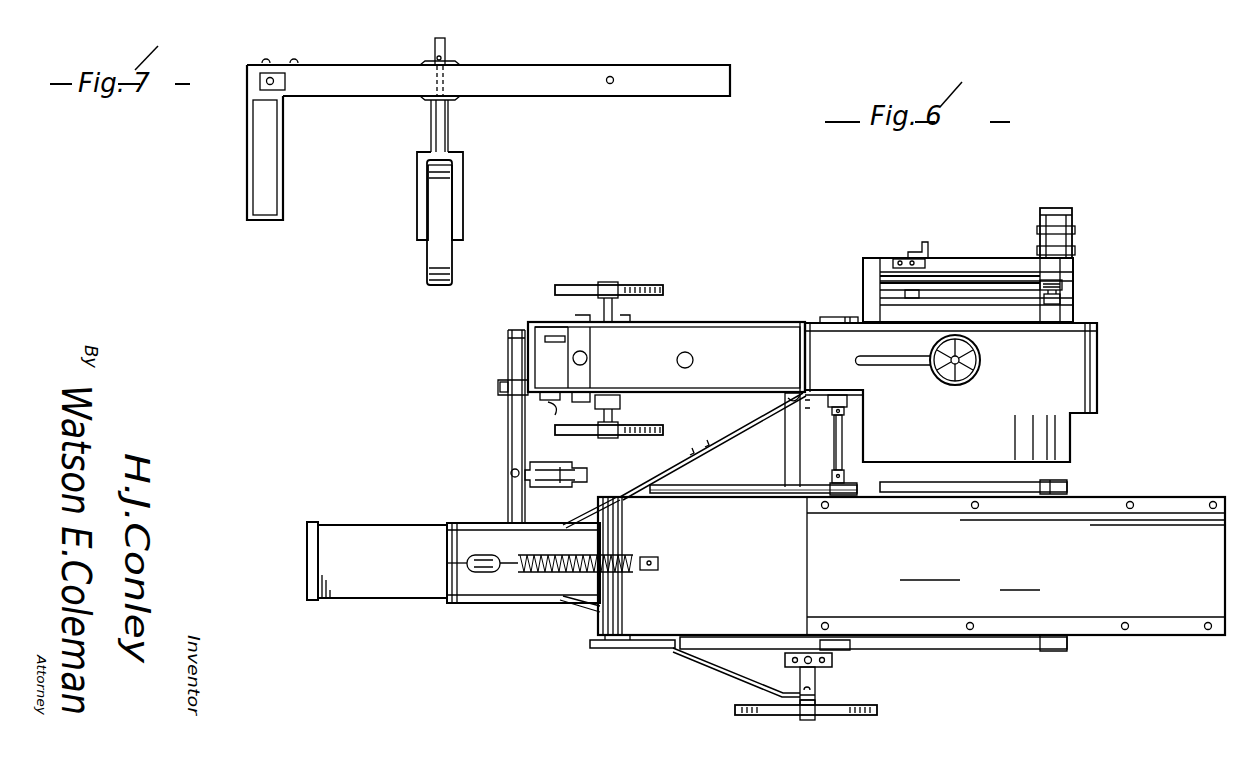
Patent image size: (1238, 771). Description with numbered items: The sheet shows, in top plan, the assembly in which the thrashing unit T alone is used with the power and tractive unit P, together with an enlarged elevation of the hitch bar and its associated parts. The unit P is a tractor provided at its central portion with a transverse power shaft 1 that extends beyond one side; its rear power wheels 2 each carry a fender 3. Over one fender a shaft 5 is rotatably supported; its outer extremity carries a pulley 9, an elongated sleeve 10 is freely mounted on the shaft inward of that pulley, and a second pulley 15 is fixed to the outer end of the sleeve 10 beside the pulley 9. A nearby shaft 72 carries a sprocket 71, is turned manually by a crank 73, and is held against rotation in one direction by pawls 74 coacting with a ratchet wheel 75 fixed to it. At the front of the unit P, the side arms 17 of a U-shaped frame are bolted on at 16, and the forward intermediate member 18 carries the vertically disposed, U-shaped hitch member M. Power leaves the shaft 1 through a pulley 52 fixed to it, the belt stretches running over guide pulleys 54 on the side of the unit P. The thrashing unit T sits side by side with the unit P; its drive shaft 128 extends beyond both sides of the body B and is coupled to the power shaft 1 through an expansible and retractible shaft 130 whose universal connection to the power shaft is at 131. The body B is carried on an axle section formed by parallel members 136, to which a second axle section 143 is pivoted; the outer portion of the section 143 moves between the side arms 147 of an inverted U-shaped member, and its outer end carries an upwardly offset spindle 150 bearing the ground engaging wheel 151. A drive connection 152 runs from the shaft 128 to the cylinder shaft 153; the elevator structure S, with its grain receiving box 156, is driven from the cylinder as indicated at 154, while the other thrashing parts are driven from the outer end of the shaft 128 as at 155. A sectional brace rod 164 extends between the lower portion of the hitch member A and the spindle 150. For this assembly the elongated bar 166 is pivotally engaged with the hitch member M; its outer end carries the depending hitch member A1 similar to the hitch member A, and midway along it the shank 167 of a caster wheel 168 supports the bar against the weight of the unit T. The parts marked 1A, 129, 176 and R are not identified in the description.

In FIG. 6, the power shaft 1 is at (835, 395).
In FIG. 6, the bolt 1A is at (1064, 285).
In FIG. 6, the rear power wheels 2 is at (472, 403).
In FIG. 6, the fender 3 is at (993, 262).
In FIG. 6, the shaft 5 is at (1062, 298).
In FIG. 6, the pulley 9 is at (1055, 212).
In FIG. 6, the elongated sleeve 10 is at (1075, 260).
In FIG. 6, the second pulley 15 is at (1075, 246).
In FIG. 6, the bolts 16 is at (630, 322).
In FIG. 6, the side arms 17 is at (552, 327).
In FIG. 6, the intermediate member 18 is at (545, 340).
In FIG. 6, the pulley 52 is at (848, 400).
In FIG. 6, the guide pulley 54 is at (598, 400).
In FIG. 6, the sprocket 71 is at (898, 261).
In FIG. 6, the shaft 72 is at (880, 283).
In FIG. 6, the crank 73 is at (925, 242).
In FIG. 6, the pawls 74 is at (918, 298).
In FIG. 6, the ratchet wheel 75 is at (885, 312).
In FIG. 6, the drive shaft 128 is at (845, 478).
In FIG. 6, the link rod 129 is at (843, 460).
In FIG. 6, the shaft 130 is at (832, 445).
In FIG. 6, the universal connection 131 is at (845, 411).
In FIG. 6, the parallel members 136 is at (790, 410).
In FIG. 6, the second axle section 143 is at (816, 682).
In FIG. 6, the side arms 147 is at (790, 667).
In FIG. 6, the spindle 150 is at (816, 698).
In FIG. 6, the ground engaging and supporting wheel 151 is at (878, 710).
In FIG. 6, the drive connection 152 is at (755, 495).
In FIG. 6, the cylinder shaft 153 is at (665, 493).
In FIG. 6, the elevator drive 154 is at (632, 650).
In FIG. 6, the drive 155 is at (848, 648).
In FIG. 6, the box 156 is at (375, 598).
In FIG. 6, the brace rod 164 is at (730, 672).
In FIG. 7, the elongated bar 166 is at (578, 77).
In FIG. 6, the elongated bar 166 is at (508, 452).
In FIG. 7, the shank 167 is at (446, 50).
In FIG. 7, the caster wheel 168 is at (445, 203).
In FIG. 6, the caster wheel 168 is at (588, 478).
In FIG. 6, the diagonal brace 176 is at (708, 450).
In FIG. 6, the hitch member A is at (955, 275).
In FIG. 7, the hitch member A1 is at (240, 195).
In FIG. 6, the body B is at (1109, 606).
In FIG. 6, the hitch member M is at (498, 385).
In FIG. 6, the power and tractive unit P is at (731, 341).
In FIG. 6, the rack R is at (545, 416).
In FIG. 6, the elevating structure S is at (520, 594).
In FIG. 6, the thrashing unit T is at (1154, 484).